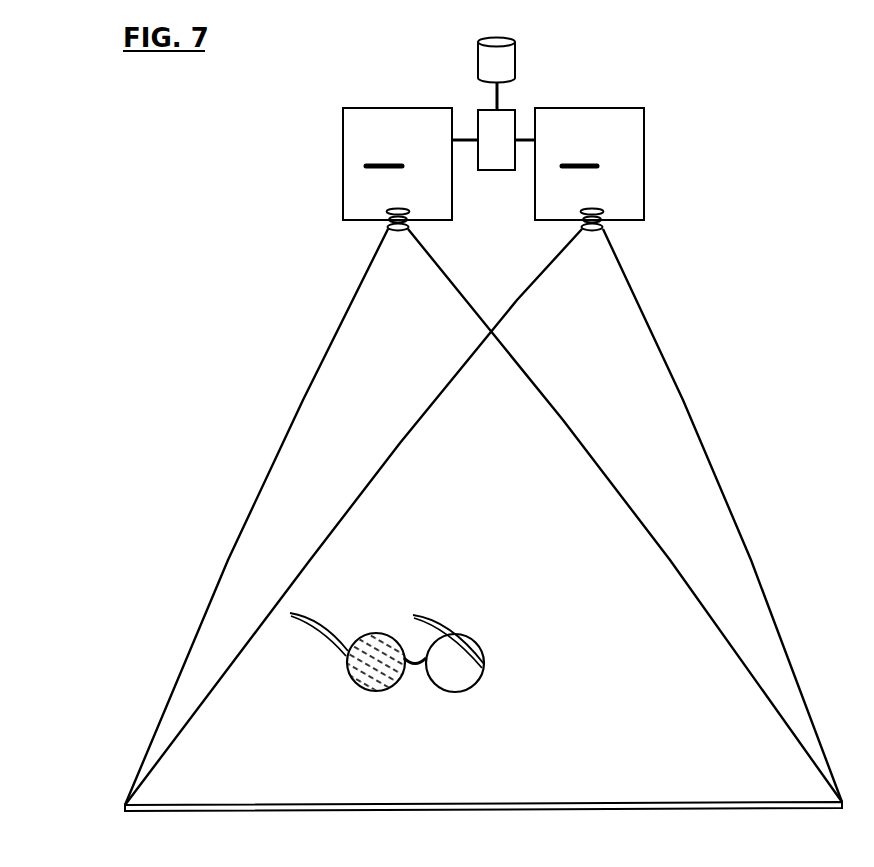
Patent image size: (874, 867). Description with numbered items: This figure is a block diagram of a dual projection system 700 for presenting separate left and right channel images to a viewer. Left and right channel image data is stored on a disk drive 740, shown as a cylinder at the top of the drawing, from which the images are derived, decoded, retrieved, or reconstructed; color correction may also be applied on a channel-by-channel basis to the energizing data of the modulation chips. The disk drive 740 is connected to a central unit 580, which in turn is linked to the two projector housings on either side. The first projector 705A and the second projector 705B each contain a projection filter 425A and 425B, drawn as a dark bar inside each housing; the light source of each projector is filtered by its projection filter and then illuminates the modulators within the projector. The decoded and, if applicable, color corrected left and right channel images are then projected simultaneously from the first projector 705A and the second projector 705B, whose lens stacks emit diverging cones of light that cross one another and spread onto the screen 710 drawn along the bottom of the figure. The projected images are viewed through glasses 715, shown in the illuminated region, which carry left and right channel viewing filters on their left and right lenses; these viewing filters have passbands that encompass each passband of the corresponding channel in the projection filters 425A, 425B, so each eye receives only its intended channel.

The dual projection system 700 is at (199, 231).
The projection filter 425A is at (366, 165).
The projection filter 425B is at (563, 165).
The first projector 705A is at (434, 204).
The second projector 705B is at (634, 204).
The processor 580 is at (519, 183).
The disk drive 740 is at (511, 76).
The screen 710 is at (660, 803).
The glasses 715 is at (321, 669).